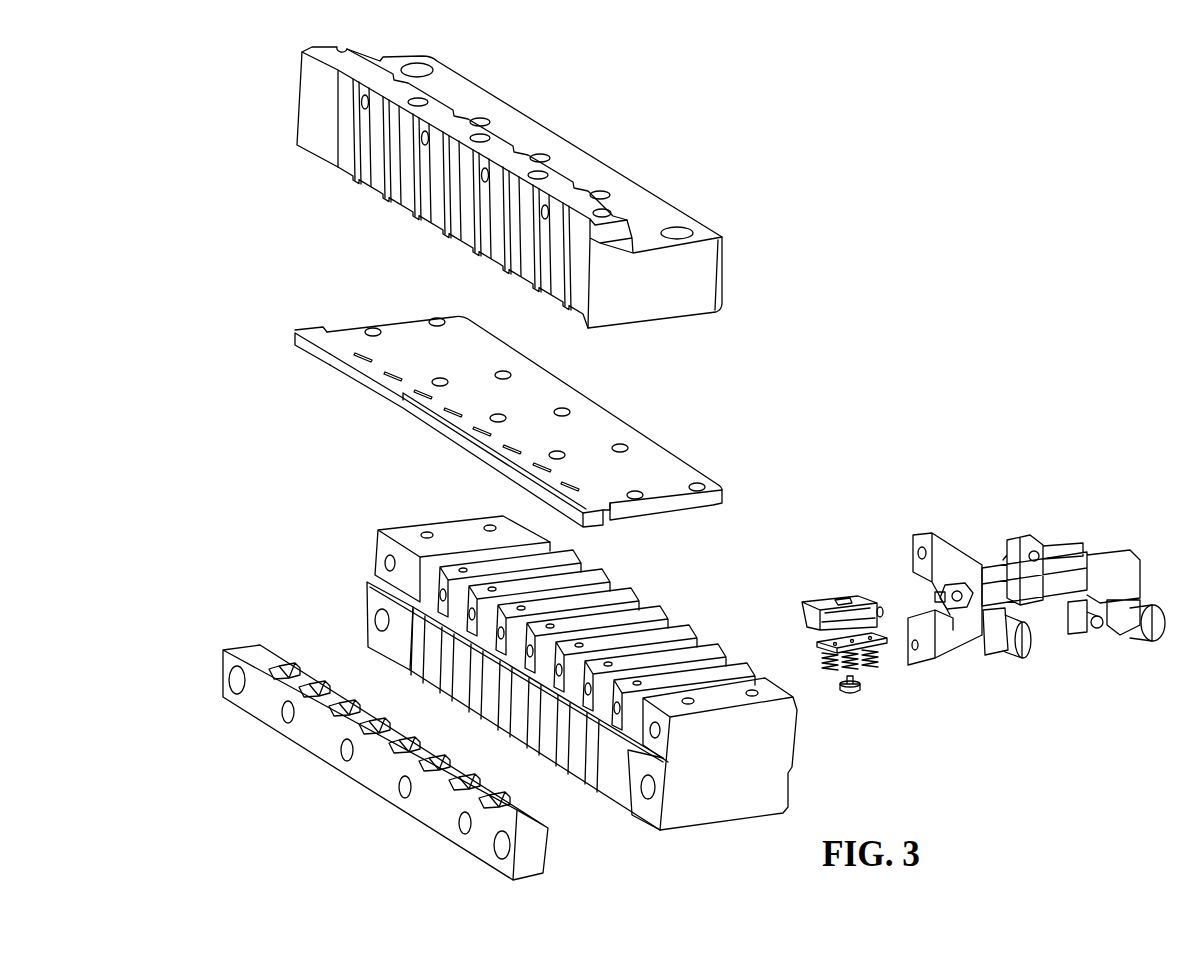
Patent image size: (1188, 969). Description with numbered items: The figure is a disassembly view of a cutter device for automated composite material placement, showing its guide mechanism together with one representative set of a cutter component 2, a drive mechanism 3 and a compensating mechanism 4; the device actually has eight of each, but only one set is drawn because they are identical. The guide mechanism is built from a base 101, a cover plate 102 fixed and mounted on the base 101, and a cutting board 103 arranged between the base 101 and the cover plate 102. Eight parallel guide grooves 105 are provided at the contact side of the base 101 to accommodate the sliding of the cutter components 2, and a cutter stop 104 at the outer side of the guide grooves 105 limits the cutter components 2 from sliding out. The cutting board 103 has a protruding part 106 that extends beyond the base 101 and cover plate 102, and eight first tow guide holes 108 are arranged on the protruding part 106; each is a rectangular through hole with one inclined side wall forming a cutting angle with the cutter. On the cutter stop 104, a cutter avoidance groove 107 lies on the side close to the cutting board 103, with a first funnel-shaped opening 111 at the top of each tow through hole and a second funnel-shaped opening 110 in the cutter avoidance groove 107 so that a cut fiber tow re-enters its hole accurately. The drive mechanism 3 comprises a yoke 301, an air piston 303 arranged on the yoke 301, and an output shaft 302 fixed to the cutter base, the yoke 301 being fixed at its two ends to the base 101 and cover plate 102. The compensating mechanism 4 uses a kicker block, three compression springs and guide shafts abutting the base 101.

The cover plate 102 is at (306, 143).
The cutting board 103 is at (404, 328).
The protruding part 106 is at (330, 340).
The first tow guide hole 108 is at (418, 392).
The base 101 is at (375, 595).
The guide groove 105 is at (617, 608).
The cutter stop 104 is at (258, 657).
The second funnel-shaped opening 110 is at (346, 706).
The first funnel-shaped opening 111 is at (397, 741).
The cutter avoidance groove 107 is at (298, 708).
The cutter component 2 is at (791, 614).
The compensating mechanism 4 is at (877, 677).
The drive mechanism 3 is at (1025, 697).
The yoke 301 is at (945, 643).
The output shaft 302 is at (950, 642).
The air piston 303 is at (1017, 648).